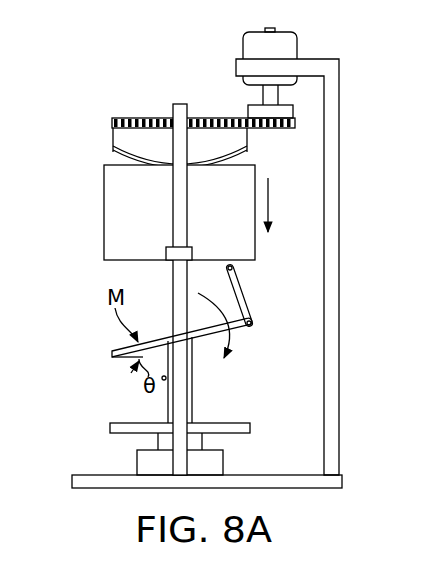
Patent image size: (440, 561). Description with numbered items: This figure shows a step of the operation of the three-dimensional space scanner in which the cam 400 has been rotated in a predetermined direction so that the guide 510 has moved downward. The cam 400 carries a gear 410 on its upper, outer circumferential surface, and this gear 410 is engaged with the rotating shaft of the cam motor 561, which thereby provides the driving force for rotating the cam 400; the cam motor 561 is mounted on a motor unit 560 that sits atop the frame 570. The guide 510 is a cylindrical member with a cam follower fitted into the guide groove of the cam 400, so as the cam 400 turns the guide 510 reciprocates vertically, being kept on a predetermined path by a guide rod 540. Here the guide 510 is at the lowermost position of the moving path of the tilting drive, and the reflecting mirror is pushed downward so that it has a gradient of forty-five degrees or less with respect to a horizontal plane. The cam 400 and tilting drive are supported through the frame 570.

The cam 400 is at (113, 143).
The gear 410 is at (122, 117).
The guide 510 is at (104, 190).
The guide rod 540 is at (173, 233).
The motor 560 is at (296, 48).
The cam motor 561 is at (293, 109).
The frame 570 is at (330, 196).